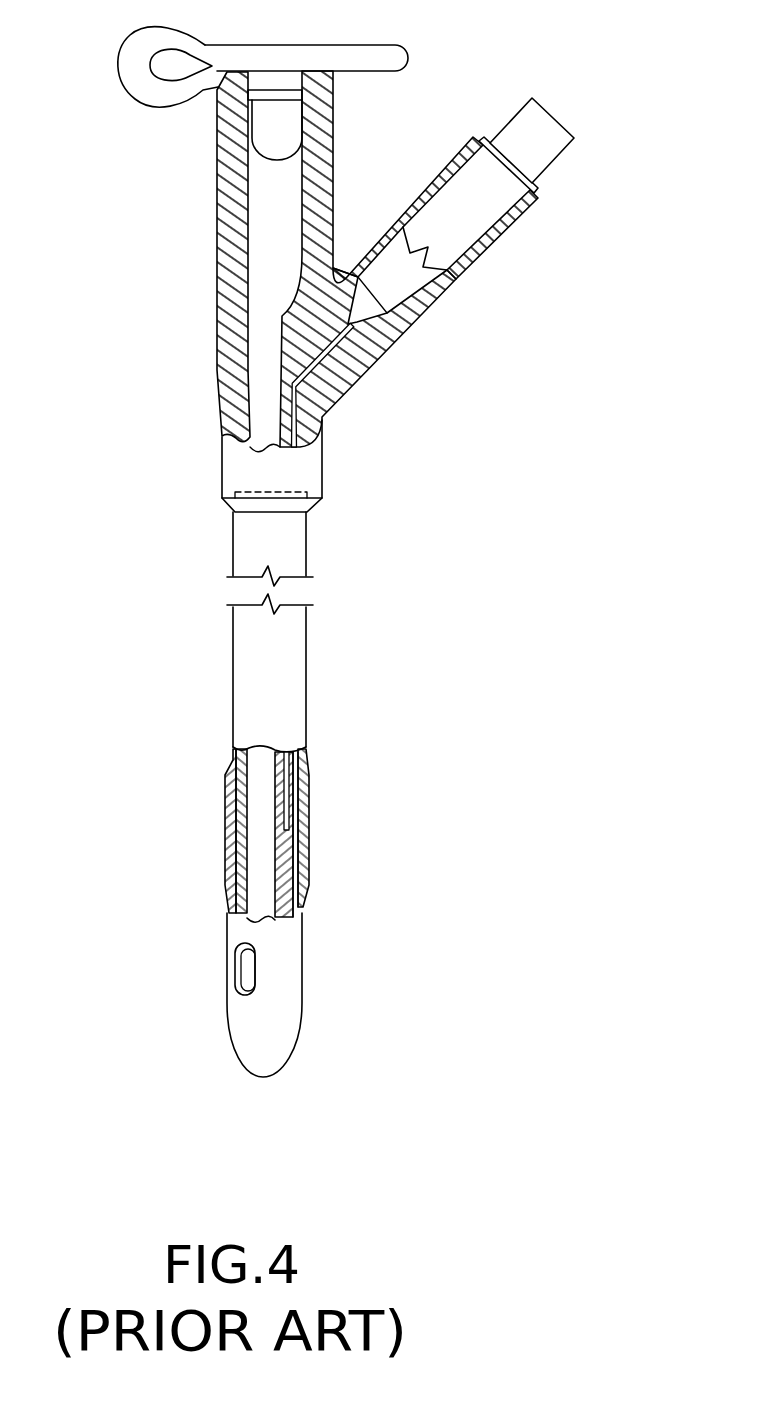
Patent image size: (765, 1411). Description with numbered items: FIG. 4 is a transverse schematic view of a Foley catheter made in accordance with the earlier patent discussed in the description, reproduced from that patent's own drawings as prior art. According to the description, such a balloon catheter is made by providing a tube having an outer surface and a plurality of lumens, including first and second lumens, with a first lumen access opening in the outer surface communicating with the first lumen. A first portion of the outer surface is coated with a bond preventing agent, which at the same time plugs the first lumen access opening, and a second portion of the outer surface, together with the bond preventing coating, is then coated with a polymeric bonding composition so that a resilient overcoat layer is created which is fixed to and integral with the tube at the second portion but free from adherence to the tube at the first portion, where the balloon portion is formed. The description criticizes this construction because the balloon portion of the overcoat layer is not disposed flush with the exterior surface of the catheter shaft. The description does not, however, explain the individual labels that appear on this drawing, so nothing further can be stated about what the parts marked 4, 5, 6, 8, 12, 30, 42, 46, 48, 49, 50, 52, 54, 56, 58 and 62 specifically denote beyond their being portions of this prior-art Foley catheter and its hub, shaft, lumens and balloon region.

The catheter 4 is at (225, 690).
The hub assembly 5 is at (345, 500).
The side channel 6 is at (320, 364).
The lumen 8 is at (260, 845).
The inner lumen gap 12 is at (308, 827).
The hub 30 is at (248, 492).
The outer wall 42 is at (312, 852).
The tubular body 46 is at (215, 240).
The locking pin 48 is at (383, 47).
The fitting 49 is at (278, 170).
The plug 50 is at (552, 112).
The side arm connector 52 is at (400, 274).
The inner tube wall 54 is at (308, 792).
The side hole 56 is at (238, 970).
The catheter wall 58 is at (228, 802).
The distal tip 62 is at (288, 980).